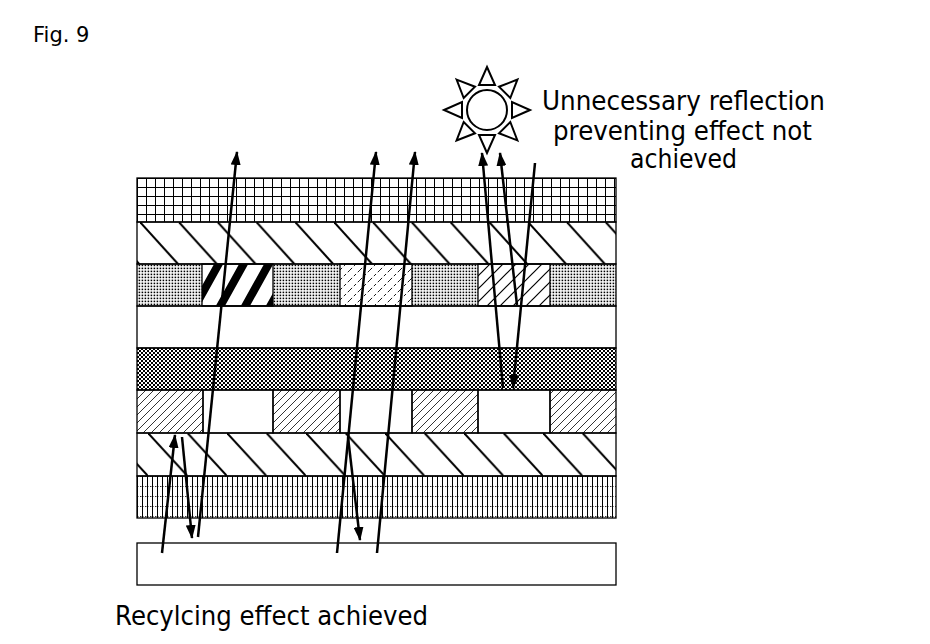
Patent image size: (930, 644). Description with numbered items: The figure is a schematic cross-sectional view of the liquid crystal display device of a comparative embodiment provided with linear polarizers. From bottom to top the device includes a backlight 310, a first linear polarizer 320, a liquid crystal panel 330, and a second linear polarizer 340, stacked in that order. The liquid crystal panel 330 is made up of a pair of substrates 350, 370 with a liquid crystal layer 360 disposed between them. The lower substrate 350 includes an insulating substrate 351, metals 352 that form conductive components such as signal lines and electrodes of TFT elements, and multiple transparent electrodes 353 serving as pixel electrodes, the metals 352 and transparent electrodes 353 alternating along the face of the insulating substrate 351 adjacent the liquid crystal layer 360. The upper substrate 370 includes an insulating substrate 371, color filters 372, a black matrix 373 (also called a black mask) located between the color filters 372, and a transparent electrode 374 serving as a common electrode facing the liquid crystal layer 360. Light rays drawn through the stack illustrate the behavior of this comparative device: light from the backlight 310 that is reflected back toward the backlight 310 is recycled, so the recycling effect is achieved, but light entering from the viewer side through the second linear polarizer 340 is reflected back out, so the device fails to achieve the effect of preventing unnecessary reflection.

The backlight 310 is at (603, 565).
The first linear polarizer 320 is at (603, 497).
The liquid crystal panel 330 is at (413, 349).
The second linear polarizer 340 is at (607, 202).
The substrate 350 is at (381, 431).
The insulating substrate 351 is at (414, 454).
The metals 352 is at (605, 412).
The transparent electrodes 353 is at (538, 413).
The liquid crystal layer 360 is at (138, 365).
The substrate 370 is at (381, 285).
The insulating substrate 371 is at (603, 248).
The color filters 372 is at (552, 285).
The black matrix 373 is at (605, 280).
The transparent electrode 374 is at (603, 333).